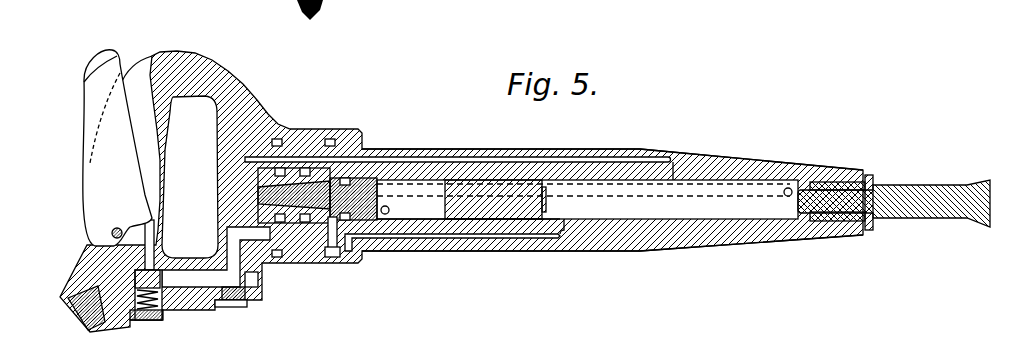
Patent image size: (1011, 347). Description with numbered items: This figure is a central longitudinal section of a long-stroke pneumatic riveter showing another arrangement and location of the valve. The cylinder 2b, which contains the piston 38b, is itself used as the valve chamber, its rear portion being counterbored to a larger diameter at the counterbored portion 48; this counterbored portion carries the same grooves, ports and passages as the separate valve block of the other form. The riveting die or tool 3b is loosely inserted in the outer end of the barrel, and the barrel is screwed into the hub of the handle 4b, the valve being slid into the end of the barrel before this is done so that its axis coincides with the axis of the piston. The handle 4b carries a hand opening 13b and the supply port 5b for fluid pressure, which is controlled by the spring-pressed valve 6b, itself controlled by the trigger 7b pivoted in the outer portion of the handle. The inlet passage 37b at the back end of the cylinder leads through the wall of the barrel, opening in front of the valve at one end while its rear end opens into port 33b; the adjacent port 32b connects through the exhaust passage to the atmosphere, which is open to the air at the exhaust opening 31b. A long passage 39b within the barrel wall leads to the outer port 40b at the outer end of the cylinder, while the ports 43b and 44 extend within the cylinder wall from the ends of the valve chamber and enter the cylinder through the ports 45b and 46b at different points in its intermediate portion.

The cylinder 2b is at (667, 243).
The riveting die or tool 3b is at (922, 215).
The handle 4b is at (216, 74).
The supply port 5b is at (207, 276).
The spring-pressed valve 6b is at (123, 313).
The trigger 7b is at (90, 169).
The hand opening 13b is at (237, 186).
The exhaust opening 31b is at (334, 257).
The port 32b is at (333, 170).
The port 33b is at (320, 167).
The inlet passage 37b is at (387, 216).
The piston 38b is at (502, 210).
The long passage 39b is at (715, 192).
The outer port 40b is at (789, 188).
The port 43b is at (533, 233).
The port 44 is at (495, 163).
The port 45b is at (567, 229).
The port 46b is at (675, 172).
The counterbored portion 48 is at (368, 177).